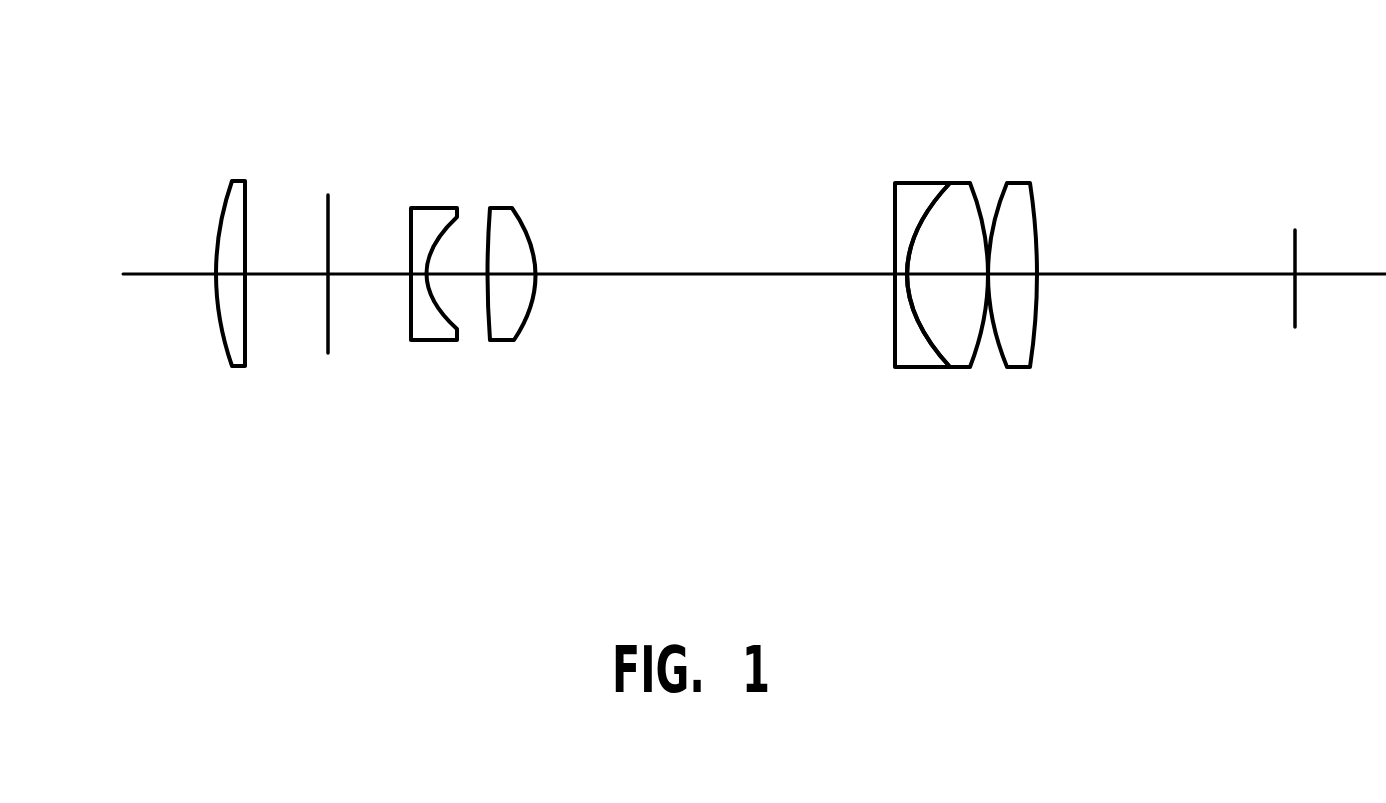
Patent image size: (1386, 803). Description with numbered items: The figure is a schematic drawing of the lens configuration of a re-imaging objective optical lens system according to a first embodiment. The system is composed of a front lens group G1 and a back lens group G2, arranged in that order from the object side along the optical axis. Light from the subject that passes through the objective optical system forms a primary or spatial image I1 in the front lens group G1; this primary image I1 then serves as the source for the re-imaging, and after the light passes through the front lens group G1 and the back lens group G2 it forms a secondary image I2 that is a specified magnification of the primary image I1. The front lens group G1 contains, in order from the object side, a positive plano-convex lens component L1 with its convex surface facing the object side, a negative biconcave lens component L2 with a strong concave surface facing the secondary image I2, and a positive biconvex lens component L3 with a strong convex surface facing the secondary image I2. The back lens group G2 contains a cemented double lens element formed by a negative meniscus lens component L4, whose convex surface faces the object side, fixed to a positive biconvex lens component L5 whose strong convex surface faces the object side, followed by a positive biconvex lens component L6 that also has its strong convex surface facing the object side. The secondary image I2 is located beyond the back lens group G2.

The positive plano-convex lens component L1 is at (241, 180).
The primary image I1 is at (333, 200).
The negative biconcave lens component L2 is at (440, 204).
The positive biconvex lens component L3 is at (502, 206).
The negative meniscus lens component L4 is at (927, 181).
The positive biconvex lens component L5 is at (960, 182).
The positive biconvex lens component L6 is at (1027, 182).
The secondary image I2 is at (1304, 233).
The front lens group G1 is at (552, 392).
The back lens group G2 is at (1068, 394).